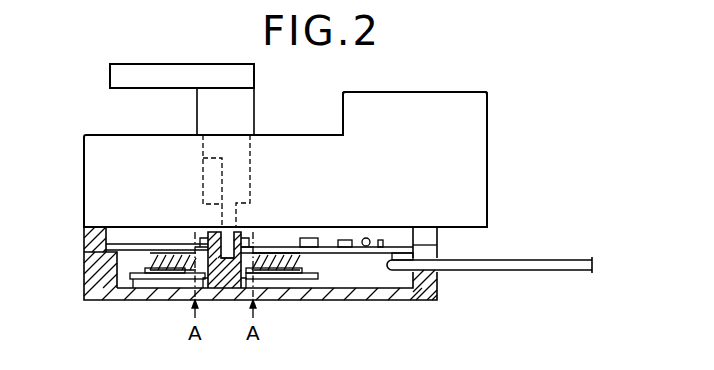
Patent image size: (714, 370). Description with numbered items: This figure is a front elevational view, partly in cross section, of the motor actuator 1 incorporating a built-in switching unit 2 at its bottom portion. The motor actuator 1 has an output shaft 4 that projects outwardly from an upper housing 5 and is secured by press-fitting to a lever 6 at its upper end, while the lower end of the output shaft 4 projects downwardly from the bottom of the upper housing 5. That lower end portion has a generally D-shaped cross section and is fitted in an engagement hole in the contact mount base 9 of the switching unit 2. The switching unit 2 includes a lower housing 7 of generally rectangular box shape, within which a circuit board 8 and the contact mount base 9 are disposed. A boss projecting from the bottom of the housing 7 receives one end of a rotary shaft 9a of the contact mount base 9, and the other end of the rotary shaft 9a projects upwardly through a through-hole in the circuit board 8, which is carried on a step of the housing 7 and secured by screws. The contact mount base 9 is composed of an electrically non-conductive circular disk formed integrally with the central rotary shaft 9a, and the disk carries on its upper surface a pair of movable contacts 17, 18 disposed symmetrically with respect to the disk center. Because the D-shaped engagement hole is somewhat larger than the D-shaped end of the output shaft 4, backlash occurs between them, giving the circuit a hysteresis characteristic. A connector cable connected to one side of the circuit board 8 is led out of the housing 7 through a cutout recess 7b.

The motor actuator 1 is at (494, 152).
The switching unit 2 is at (422, 302).
The output shaft 4 is at (237, 290).
The upper housing 5 is at (397, 106).
The lever 6 is at (254, 77).
The lower housing 7 is at (86, 287).
The cutout recess 7b is at (437, 245).
The circuit board 8 is at (356, 256).
The contact mount base 9 is at (138, 276).
The rotary shaft 9a is at (214, 300).
The movable contact 17 is at (170, 280).
The movable contact 18 is at (286, 280).